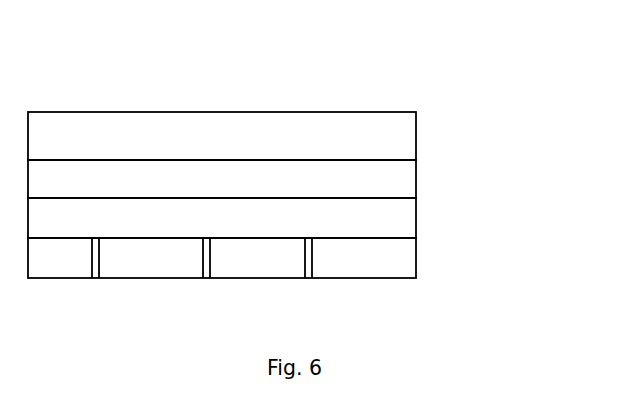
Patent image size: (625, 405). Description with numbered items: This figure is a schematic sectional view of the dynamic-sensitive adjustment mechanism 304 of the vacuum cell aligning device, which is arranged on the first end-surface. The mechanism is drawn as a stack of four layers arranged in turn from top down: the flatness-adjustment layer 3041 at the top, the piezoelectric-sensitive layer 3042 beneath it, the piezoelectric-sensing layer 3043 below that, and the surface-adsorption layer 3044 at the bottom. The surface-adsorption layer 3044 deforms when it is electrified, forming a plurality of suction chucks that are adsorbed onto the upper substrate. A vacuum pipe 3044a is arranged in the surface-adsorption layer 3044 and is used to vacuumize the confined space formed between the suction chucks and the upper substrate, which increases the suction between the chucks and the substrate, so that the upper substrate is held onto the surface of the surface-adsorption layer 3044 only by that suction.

The dynamic-sensitive adjustment mechanism 304 is at (217, 72).
The flatness-adjustment layer 3041 is at (416, 133).
The piezoelectric-sensitive layer 3042 is at (416, 183).
The piezoelectric-sensing layer 3043 is at (416, 223).
The surface-adsorption layer 3044 is at (416, 257).
The vacuum pipe 3044a is at (312, 265).